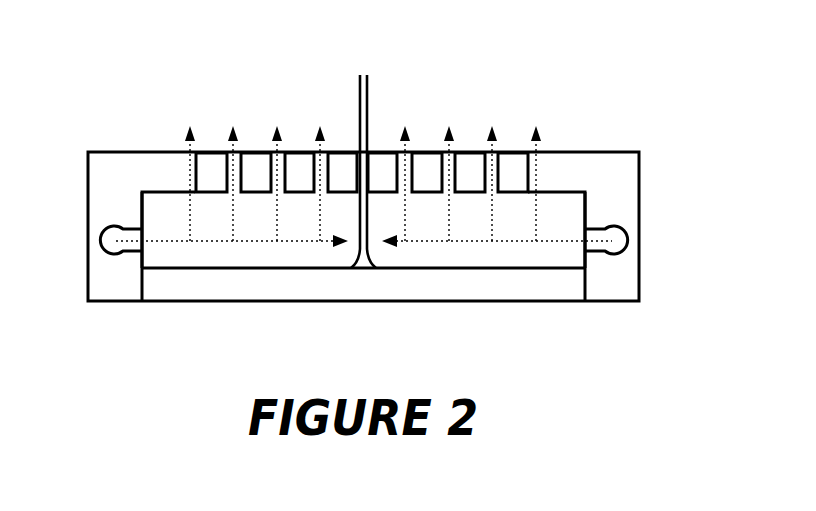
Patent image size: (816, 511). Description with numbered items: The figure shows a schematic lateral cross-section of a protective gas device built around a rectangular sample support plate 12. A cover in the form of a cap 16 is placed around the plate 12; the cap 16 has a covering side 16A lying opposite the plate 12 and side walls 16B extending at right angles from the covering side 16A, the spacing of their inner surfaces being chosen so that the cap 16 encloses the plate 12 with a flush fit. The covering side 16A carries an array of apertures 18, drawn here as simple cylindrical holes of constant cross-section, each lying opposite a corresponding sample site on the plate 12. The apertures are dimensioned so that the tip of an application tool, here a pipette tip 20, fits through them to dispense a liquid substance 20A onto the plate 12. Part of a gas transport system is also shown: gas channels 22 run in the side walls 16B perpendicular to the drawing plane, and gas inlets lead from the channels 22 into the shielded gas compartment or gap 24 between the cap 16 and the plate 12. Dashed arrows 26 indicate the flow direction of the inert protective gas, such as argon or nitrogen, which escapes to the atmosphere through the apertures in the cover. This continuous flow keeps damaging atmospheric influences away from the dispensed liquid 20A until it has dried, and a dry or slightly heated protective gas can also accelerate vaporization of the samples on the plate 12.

The sample support plate 12 is at (363, 285).
The cap 16 is at (567, 138).
The covering side 16A is at (163, 230).
The side walls 16B is at (580, 246).
The array of apertures 18 is at (258, 107).
The pipette tip 20 is at (379, 162).
The liquid substance 20A is at (363, 262).
The gas channels 22 is at (625, 241).
The gas compartment 24 is at (364, 227).
The dashed arrows 26 is at (253, 242).